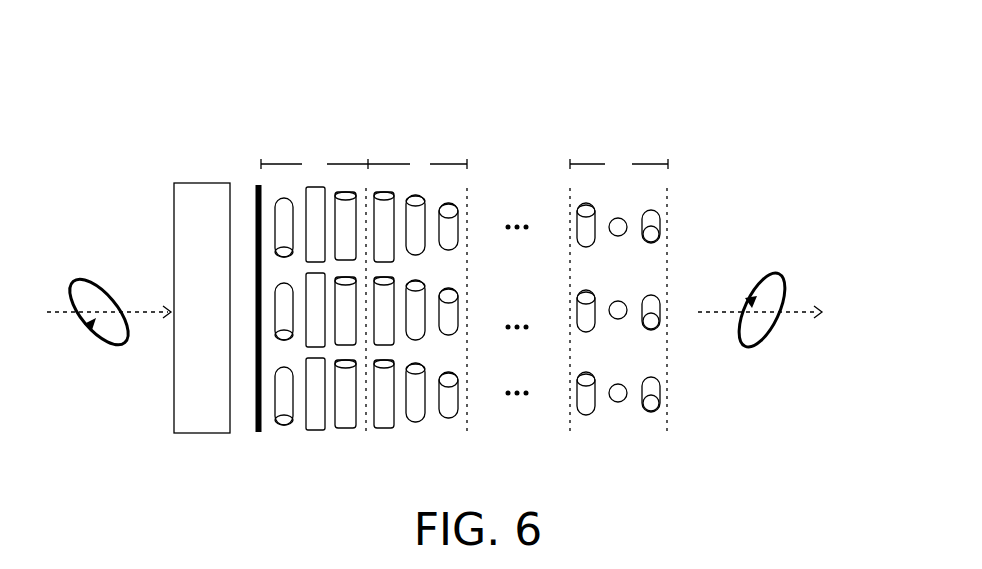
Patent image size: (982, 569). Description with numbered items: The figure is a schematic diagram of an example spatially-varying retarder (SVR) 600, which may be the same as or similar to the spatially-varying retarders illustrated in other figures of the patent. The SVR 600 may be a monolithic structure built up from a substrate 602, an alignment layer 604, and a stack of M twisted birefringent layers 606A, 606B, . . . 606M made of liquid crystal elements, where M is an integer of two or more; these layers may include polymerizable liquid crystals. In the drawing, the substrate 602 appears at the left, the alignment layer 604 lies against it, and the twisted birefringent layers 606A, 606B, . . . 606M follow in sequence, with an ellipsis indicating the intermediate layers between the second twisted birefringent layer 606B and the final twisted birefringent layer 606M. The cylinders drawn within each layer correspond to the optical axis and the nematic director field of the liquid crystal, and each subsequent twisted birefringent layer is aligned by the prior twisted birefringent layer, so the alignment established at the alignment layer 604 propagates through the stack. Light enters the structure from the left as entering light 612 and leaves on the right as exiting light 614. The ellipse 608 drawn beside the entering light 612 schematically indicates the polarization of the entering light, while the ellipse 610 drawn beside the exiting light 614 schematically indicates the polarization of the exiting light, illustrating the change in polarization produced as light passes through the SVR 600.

The spatially-varying retarder 600 is at (745, 52).
The substrate 602 is at (195, 182).
The alignment layer 604 is at (257, 190).
The first twisted birefringent layer 606A is at (317, 138).
The second twisted birefringent layer 606B is at (418, 138).
The M-th twisted birefringent layer 606M is at (619, 138).
The ellipse indicating polarization of entering light 608 is at (116, 358).
The ellipse indicating polarization of exiting light 610 is at (751, 365).
The entering light 612 is at (144, 310).
The exiting light 614 is at (707, 307).